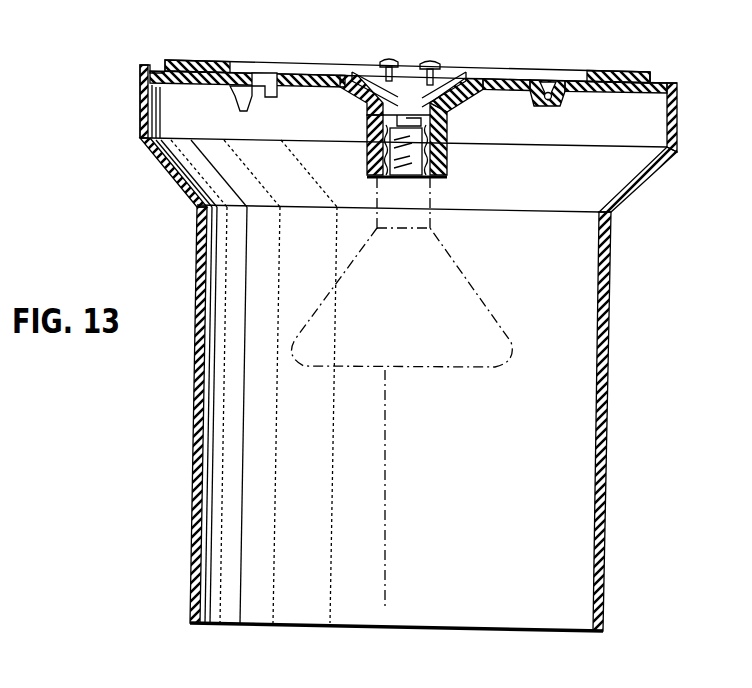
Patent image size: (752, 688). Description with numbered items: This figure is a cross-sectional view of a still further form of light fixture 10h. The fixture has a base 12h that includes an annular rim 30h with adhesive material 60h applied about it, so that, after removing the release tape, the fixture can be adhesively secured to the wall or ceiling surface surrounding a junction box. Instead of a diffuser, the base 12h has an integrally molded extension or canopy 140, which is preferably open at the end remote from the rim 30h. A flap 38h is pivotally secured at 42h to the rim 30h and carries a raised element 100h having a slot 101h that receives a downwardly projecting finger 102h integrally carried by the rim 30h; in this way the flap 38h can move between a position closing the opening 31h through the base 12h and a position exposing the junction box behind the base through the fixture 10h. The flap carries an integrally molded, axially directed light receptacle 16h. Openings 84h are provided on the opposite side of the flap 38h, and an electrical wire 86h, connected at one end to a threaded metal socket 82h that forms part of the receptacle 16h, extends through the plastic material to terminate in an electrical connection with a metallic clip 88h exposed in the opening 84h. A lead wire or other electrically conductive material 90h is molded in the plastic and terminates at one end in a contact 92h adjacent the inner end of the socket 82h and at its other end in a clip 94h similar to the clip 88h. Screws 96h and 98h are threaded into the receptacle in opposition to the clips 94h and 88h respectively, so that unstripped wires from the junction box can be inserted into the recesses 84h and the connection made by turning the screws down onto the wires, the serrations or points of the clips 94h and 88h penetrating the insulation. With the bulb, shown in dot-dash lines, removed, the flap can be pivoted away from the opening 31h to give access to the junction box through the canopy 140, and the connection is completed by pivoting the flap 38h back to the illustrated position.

The light fixture 10h is at (653, 250).
The base 12h is at (675, 104).
The light receptacle 16h is at (447, 148).
The annular rim 30h is at (597, 92).
The opening 31h is at (250, 80).
The flap 38h is at (493, 92).
The pivot 42h is at (552, 100).
The adhesive material 60h is at (618, 75).
The threaded metal socket 82h is at (420, 178).
The openings 84h is at (370, 76).
The electrical wire 86h is at (449, 120).
The metallic clip 88h is at (452, 82).
The lead wire 90h is at (378, 115).
The contact 92h is at (370, 128).
The clip 94h is at (345, 80).
The screw 96h is at (389, 62).
The screw 98h is at (430, 64).
The raised element 100h is at (263, 93).
The slot 101h is at (250, 86).
The downwardly projecting finger 102h is at (243, 108).
The canopy 140 is at (607, 357).